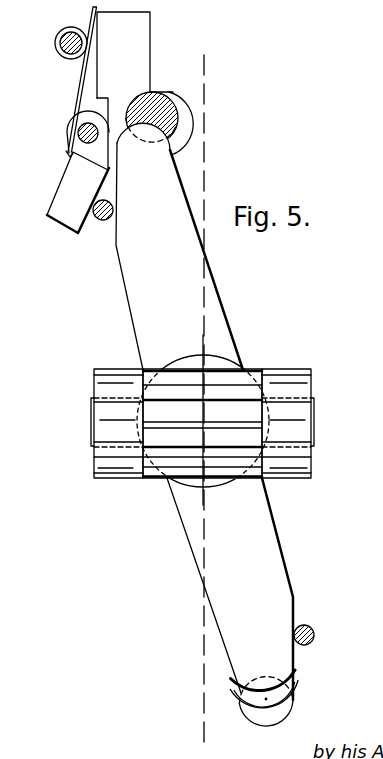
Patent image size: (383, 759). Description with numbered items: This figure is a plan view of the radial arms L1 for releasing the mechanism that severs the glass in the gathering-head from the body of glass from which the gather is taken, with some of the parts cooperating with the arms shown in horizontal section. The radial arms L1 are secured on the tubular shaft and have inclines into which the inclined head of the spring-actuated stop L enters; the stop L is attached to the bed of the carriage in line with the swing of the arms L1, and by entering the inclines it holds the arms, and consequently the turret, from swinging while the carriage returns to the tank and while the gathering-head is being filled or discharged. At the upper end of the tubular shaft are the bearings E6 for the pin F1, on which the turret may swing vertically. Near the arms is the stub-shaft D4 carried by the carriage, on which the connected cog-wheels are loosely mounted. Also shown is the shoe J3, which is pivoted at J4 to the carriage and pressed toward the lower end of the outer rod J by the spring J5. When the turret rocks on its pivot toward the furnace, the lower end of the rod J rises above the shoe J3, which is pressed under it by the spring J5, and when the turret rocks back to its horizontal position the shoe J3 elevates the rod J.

The spring J5 is at (79, 88).
The stub-shaft D4 is at (160, 113).
The pivot J4 is at (78, 128).
The shoe J3 is at (72, 178).
The outer rod J is at (322, 632).
The radial arms L1 is at (253, 568).
The pin F1 is at (188, 437).
The bearings E6 is at (108, 457).
The spring-actuated stop L is at (298, 703).